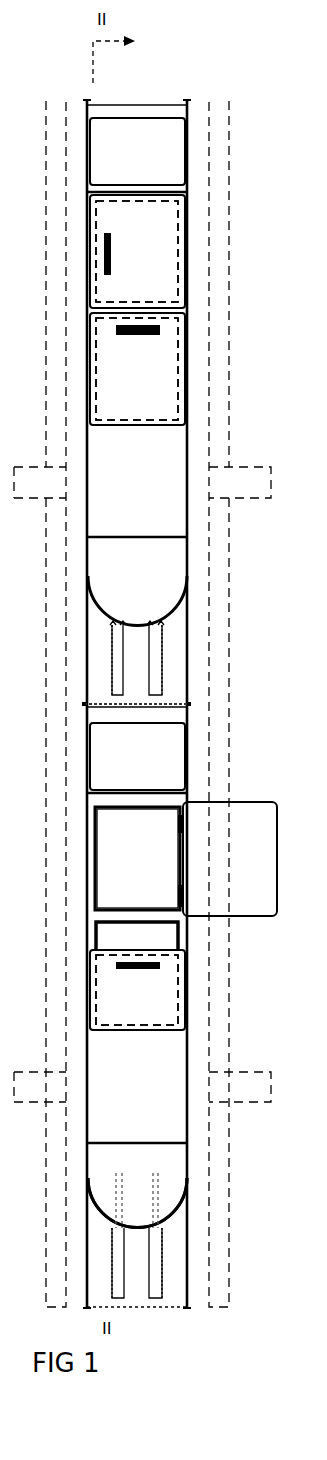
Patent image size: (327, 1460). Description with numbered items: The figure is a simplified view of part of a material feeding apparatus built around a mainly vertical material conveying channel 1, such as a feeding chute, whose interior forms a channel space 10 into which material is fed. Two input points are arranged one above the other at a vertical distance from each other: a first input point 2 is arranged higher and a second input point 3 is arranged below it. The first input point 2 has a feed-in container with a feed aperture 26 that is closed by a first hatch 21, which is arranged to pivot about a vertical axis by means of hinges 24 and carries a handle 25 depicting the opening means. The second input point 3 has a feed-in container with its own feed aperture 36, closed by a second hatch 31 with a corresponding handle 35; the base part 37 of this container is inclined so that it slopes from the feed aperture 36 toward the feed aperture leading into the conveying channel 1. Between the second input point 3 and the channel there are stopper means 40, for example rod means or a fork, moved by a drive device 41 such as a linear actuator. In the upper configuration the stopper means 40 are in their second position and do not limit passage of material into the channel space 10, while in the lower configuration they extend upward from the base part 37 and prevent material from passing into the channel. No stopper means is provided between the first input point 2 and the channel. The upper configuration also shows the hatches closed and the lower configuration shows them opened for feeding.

The material conveying channel 1 is at (64, 428).
The channel space 10 is at (85, 478).
The first input point 2 is at (162, 237).
The first hatch 21 is at (170, 263).
The hinges 24 is at (182, 826).
The handle 25 is at (104, 249).
The feed aperture of the feed-in container 26 is at (163, 857).
The second input point 3 is at (170, 356).
The second hatch 31 is at (154, 387).
The handle 35 is at (110, 328).
The feed aperture of the feed-in container 36 is at (171, 942).
The base part of the feed-in container 37 is at (176, 1184).
The stopper means 40 is at (113, 627).
The drive device 41 is at (115, 656).